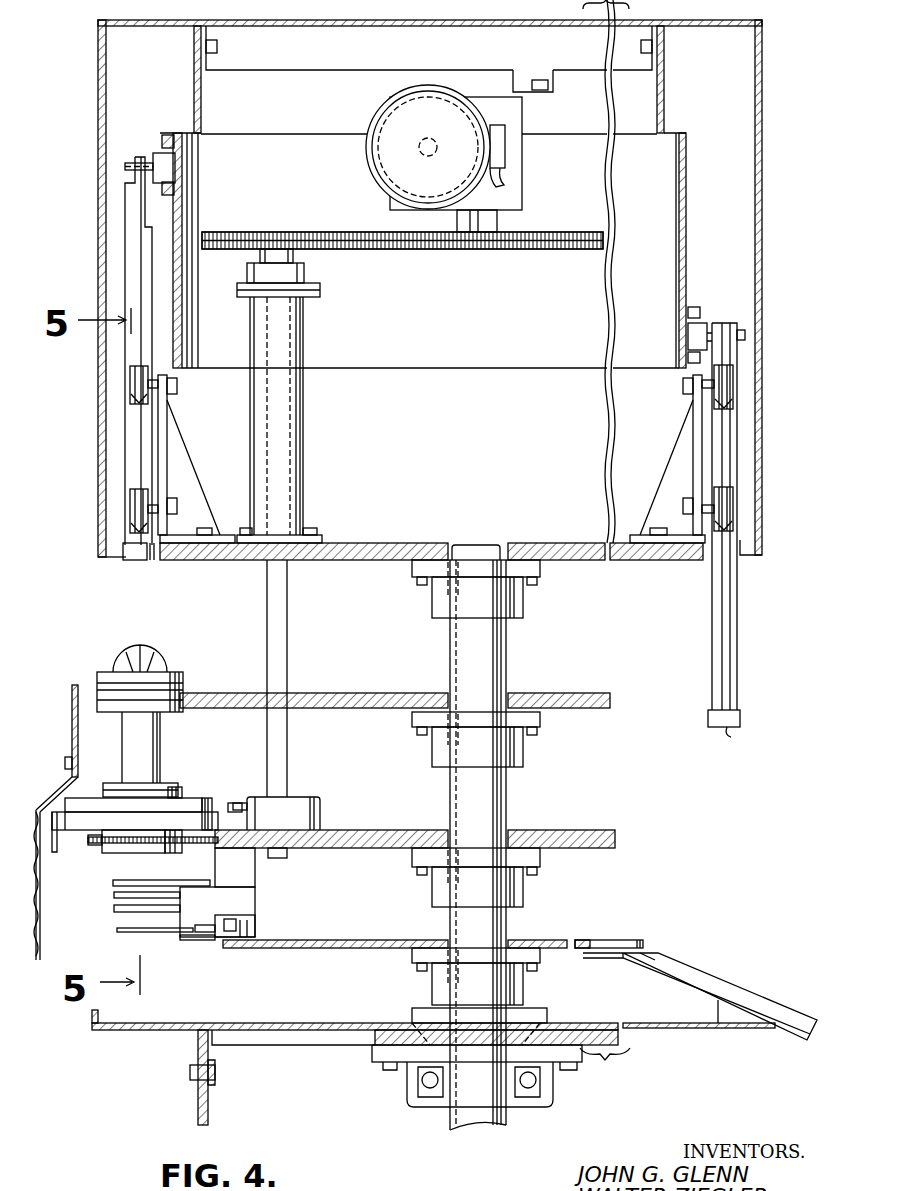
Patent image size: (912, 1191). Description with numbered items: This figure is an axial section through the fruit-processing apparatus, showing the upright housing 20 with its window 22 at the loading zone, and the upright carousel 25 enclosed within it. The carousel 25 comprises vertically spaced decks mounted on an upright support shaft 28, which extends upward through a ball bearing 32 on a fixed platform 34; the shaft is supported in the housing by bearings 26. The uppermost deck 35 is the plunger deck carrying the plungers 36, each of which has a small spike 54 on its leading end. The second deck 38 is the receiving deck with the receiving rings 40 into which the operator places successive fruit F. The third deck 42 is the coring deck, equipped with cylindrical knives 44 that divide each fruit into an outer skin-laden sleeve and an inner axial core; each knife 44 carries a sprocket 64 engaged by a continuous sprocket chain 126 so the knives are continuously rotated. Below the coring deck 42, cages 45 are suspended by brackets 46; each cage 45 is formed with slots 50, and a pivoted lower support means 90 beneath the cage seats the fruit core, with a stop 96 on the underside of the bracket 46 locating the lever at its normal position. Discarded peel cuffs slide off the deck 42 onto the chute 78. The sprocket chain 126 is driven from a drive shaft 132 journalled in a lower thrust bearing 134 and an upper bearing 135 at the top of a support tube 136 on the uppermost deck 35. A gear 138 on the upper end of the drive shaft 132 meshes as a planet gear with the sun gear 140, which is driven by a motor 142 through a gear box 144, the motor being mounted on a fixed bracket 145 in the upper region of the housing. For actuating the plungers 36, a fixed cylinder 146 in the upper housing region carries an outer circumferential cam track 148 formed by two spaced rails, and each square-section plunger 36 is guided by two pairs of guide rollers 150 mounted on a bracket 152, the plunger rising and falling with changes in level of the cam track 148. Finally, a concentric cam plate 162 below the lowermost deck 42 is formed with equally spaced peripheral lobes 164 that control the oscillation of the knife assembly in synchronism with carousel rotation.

The housing 20 is at (89, 134).
The window 22 is at (100, 561).
The carousel 25 is at (90, 662).
The bearing 26 is at (524, 612).
The upright support shaft 28 is at (507, 815).
The ball bearing 32 is at (410, 1092).
The fixed platform 34 is at (601, 1050).
The uppermost deck 35 is at (371, 562).
The plunger 36 is at (135, 238).
The second deck 38 is at (383, 710).
The receiving ring 40 is at (187, 691).
The third deck 42 is at (383, 830).
The cylindrical knife 44 is at (161, 755).
The cage 45 is at (118, 897).
The bracket 46 is at (250, 872).
The slots 50 is at (118, 921).
The spike 54 is at (130, 563).
The sprocket 64 is at (95, 850).
The chute 78 is at (706, 982).
The lower support means 90 is at (187, 942).
The stop 96 is at (257, 925).
The sprocket chain 126 is at (215, 848).
The drive shaft 132 is at (290, 665).
The lower thrust bearing 134 is at (306, 805).
The upper bearing 135 is at (306, 279).
The support tube 136 is at (305, 478).
The gear 138 is at (256, 232).
The gear 140 is at (571, 249).
The motor 142 is at (440, 190).
The gear box 144 is at (517, 183).
The fixed bracket 145 is at (525, 94).
The fixed cylinder 146 is at (700, 178).
The cam track 148 is at (166, 133).
The guide rollers 150 is at (130, 391).
The bracket 152 is at (167, 460).
The cam plate 162 is at (335, 940).
The peripheral lobes 164 is at (646, 946).
The fruit F is at (160, 663).